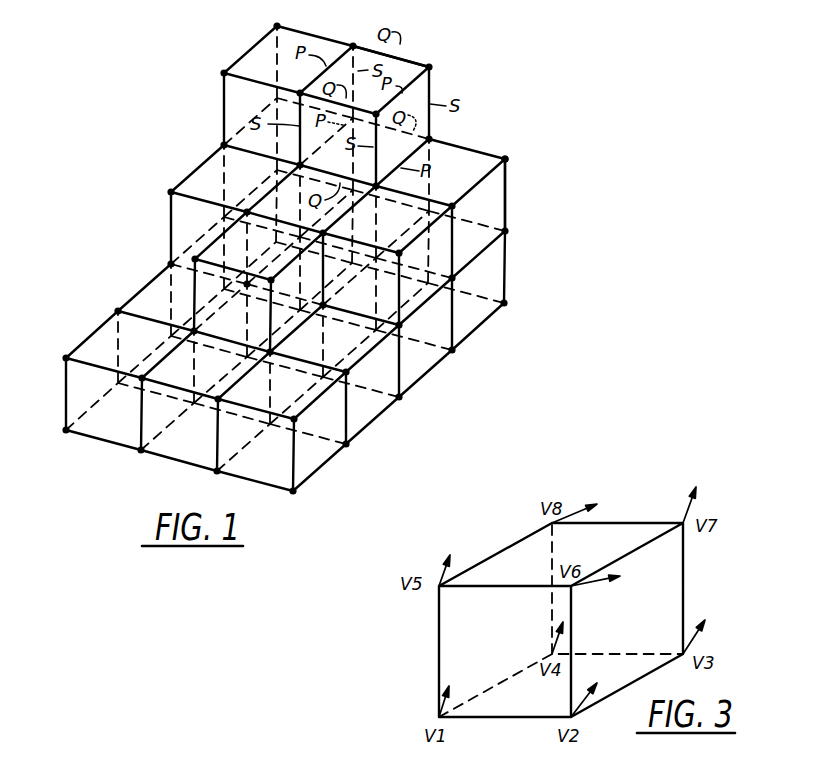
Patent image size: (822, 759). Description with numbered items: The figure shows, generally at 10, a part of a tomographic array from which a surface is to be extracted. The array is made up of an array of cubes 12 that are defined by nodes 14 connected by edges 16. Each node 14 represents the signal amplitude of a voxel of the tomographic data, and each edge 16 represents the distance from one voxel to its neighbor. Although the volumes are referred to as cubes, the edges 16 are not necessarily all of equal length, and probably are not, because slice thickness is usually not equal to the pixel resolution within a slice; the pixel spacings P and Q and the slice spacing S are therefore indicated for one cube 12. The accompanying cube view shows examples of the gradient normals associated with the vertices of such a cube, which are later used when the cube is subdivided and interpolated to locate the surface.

The part of a tomographic array 10 is at (479, 123).
The cube 12 is at (398, 63).
The node 14 is at (505, 161).
The edge 16 is at (505, 196).